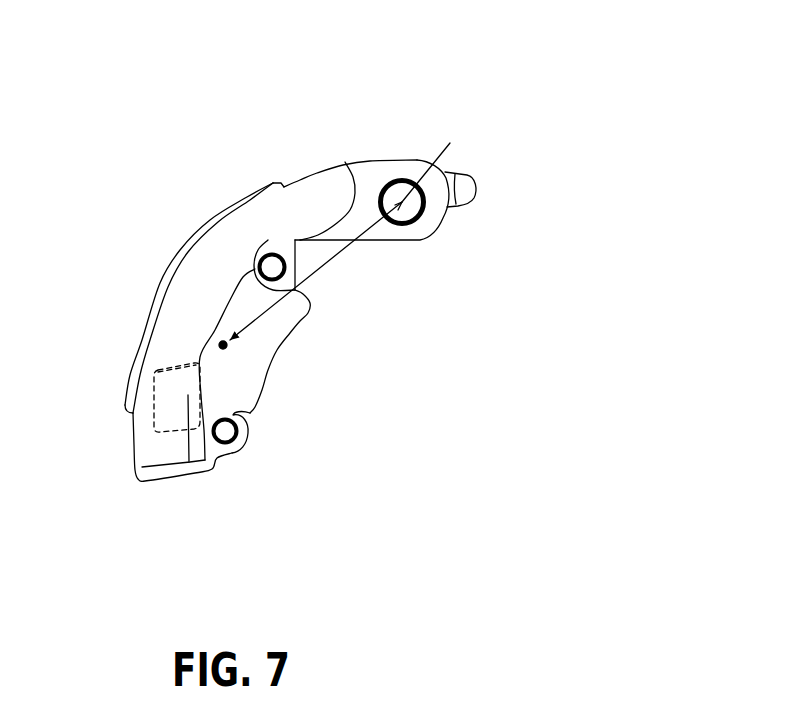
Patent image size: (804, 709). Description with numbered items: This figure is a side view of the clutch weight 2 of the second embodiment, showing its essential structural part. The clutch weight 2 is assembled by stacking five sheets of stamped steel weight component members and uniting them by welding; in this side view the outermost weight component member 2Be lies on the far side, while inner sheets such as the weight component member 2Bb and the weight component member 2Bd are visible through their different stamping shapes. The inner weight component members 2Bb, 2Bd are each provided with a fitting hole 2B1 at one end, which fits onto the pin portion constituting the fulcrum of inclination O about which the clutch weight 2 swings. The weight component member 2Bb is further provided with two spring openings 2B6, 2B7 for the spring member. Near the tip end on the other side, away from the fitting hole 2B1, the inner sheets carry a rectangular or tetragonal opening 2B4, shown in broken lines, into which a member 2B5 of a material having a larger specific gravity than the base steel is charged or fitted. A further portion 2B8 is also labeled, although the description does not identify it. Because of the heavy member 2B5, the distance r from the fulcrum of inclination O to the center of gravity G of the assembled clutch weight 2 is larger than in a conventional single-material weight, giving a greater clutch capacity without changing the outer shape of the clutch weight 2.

The clutch weight 2 is at (147, 122).
The fitting hole 2B1 is at (407, 208).
The opening 2B4 is at (165, 415).
The member 2B5 is at (127, 453).
The spring opening 2B6 is at (276, 273).
The spring opening 2B7 is at (226, 429).
The brake lining 2B8 is at (162, 276).
The weight component member 2Bb is at (311, 282).
The weight component member 2Bd is at (247, 353).
The weight component member 2Be is at (183, 302).
The fulcrum of inclination O is at (441, 158).
The center of gravity G is at (237, 333).
The distance r is at (316, 271).